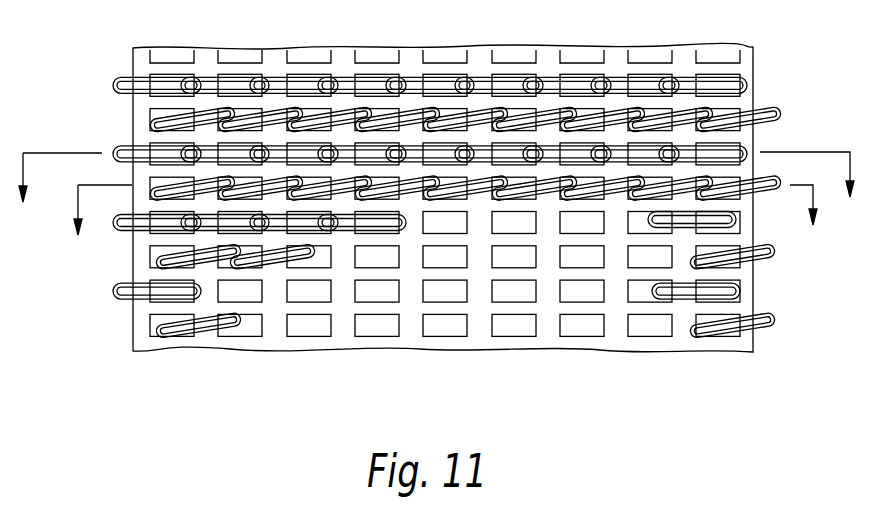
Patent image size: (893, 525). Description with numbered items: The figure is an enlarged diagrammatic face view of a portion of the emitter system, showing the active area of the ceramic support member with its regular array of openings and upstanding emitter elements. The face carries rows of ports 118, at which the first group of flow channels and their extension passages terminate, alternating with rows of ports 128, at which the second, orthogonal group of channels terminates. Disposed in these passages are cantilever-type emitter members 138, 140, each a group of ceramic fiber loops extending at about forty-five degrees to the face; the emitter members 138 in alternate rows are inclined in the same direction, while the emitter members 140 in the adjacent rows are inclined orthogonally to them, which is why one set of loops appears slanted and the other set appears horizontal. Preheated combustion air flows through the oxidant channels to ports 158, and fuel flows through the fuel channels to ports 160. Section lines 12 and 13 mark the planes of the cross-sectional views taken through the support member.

The section line 12- 12 is at (444, 161).
The section line 13- 13 is at (455, 227).
The ports 118 is at (133, 182).
The ports 128 is at (158, 150).
The emitter members 138 is at (343, 113).
The emitter members 140 is at (543, 75).
The ports 158 is at (313, 253).
The ports 160 is at (403, 294).